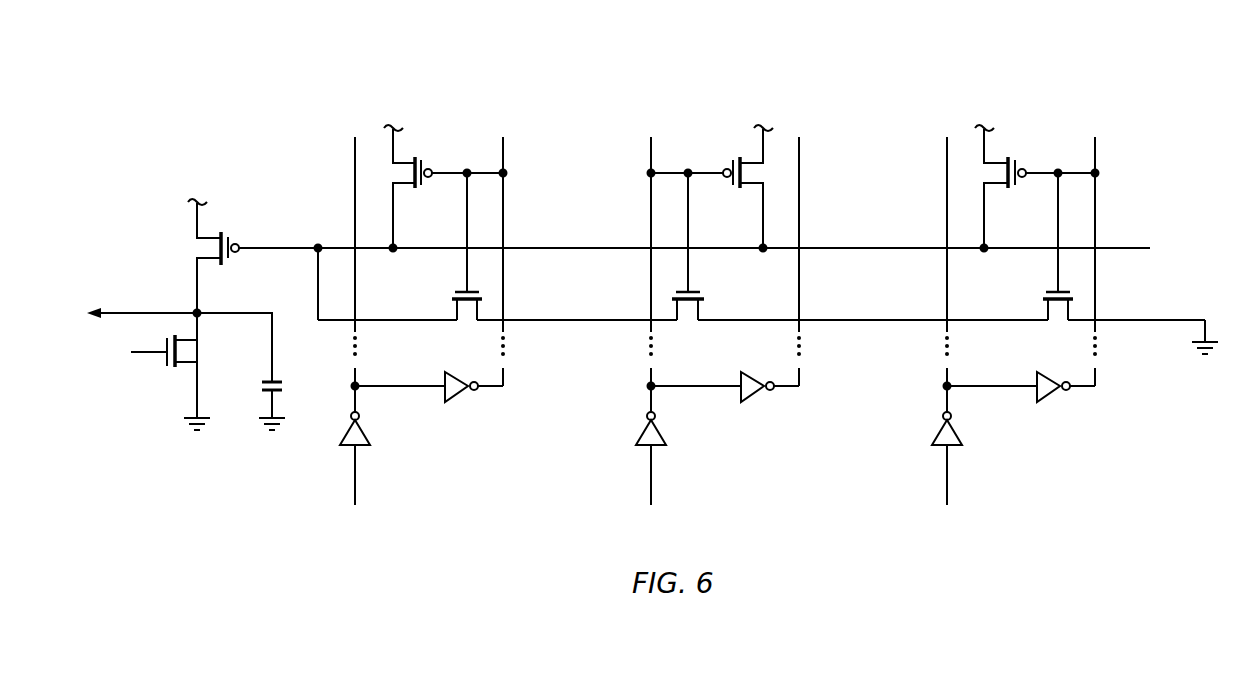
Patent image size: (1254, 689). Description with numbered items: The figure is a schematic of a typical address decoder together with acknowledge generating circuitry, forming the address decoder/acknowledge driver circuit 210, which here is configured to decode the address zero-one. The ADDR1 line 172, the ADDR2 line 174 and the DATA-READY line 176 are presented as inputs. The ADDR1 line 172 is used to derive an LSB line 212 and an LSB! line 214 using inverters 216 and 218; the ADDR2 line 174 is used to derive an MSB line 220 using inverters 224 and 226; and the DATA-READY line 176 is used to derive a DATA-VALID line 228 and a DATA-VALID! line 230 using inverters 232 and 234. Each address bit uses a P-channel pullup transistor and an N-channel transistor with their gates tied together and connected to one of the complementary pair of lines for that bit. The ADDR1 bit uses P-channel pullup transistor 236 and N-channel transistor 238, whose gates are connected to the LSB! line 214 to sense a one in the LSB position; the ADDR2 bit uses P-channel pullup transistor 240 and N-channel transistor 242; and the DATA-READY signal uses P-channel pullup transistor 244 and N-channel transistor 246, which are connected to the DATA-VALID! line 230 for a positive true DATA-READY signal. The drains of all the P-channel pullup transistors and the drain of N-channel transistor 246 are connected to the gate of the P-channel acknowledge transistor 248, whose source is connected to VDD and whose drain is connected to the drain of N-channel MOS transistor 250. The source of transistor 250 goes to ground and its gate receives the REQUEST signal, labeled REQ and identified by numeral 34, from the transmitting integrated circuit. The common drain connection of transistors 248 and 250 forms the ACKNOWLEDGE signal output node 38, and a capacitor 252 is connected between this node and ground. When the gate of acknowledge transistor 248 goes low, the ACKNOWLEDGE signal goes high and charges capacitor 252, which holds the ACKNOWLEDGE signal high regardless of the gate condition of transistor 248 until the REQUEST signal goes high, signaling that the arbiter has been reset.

The address decoder/acknowledge driver circuit 210 is at (953, 52).
The P-channel acknowledge transistor 248 is at (226, 236).
The ACKNOWLEDGE signal output node 38 is at (197, 291).
The N-channel MOS transistor 250 is at (199, 348).
The request signal line REQ 34 is at (151, 353).
The capacitor 252 is at (285, 388).
The P-channel pullup transistor 244 is at (420, 155).
The N-channel transistor 246 is at (455, 291).
The P-channel pullup transistor 240 is at (736, 156).
The N-channel transistor 242 is at (704, 292).
The P-channel pullup transistor 236 is at (1012, 155).
The N-channel transistor 238 is at (1045, 292).
The DATA-VALID line 228 is at (357, 373).
The DATA-VALID! line 230 is at (505, 373).
The inverter 232 is at (367, 432).
The inverter 234 is at (461, 399).
The DATA-READY line 176 is at (357, 457).
The MSB line 220 is at (653, 373).
The inverter 224 is at (663, 432).
The inverter 226 is at (757, 399).
The ADDR2 line 174 is at (653, 457).
The LSB line 212 is at (949, 373).
The LSB! line 214 is at (1097, 373).
The inverter 216 is at (959, 432).
The inverter 218 is at (1053, 399).
The ADDR1 line 172 is at (949, 457).